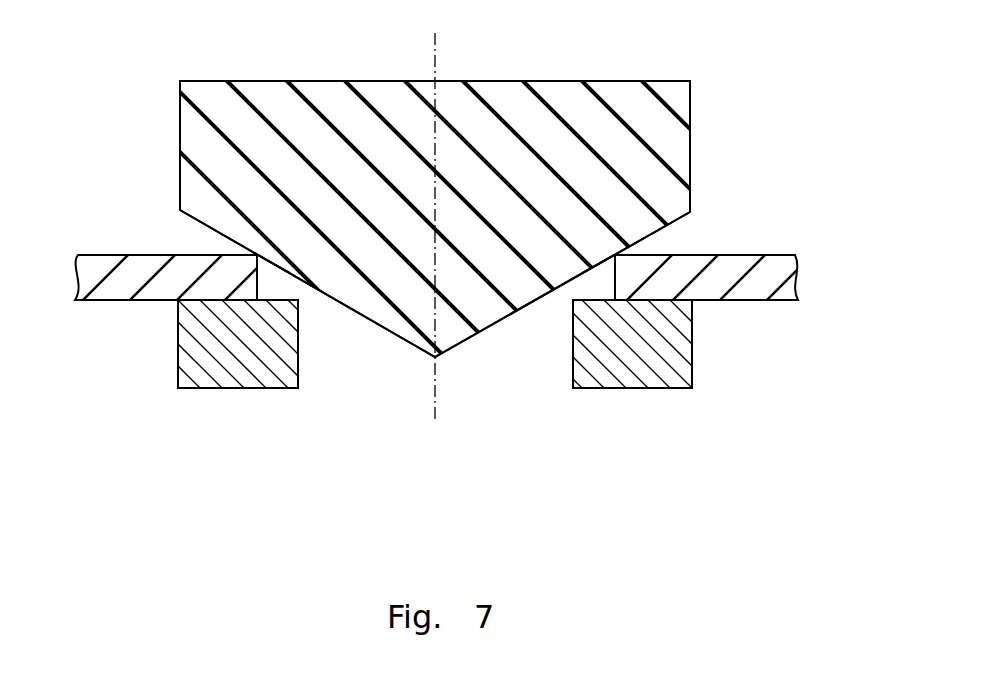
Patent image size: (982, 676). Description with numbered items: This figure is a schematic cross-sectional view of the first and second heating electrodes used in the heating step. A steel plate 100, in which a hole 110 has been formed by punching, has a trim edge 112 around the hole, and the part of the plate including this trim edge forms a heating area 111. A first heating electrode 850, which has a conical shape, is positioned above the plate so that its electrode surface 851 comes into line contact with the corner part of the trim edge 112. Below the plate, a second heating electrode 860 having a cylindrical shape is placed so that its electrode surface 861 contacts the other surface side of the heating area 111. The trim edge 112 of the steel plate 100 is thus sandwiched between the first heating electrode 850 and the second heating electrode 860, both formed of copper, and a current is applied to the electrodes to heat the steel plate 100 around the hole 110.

The first heating electrode 850 is at (677, 150).
The electrode surface 851 is at (357, 312).
The hole 110 is at (550, 305).
The trim edge 112 is at (272, 265).
The steel plate 100 is at (93, 253).
The heating area 111 is at (218, 272).
The second heating electrode 860 is at (233, 388).
The electrode surface 861 is at (190, 305).